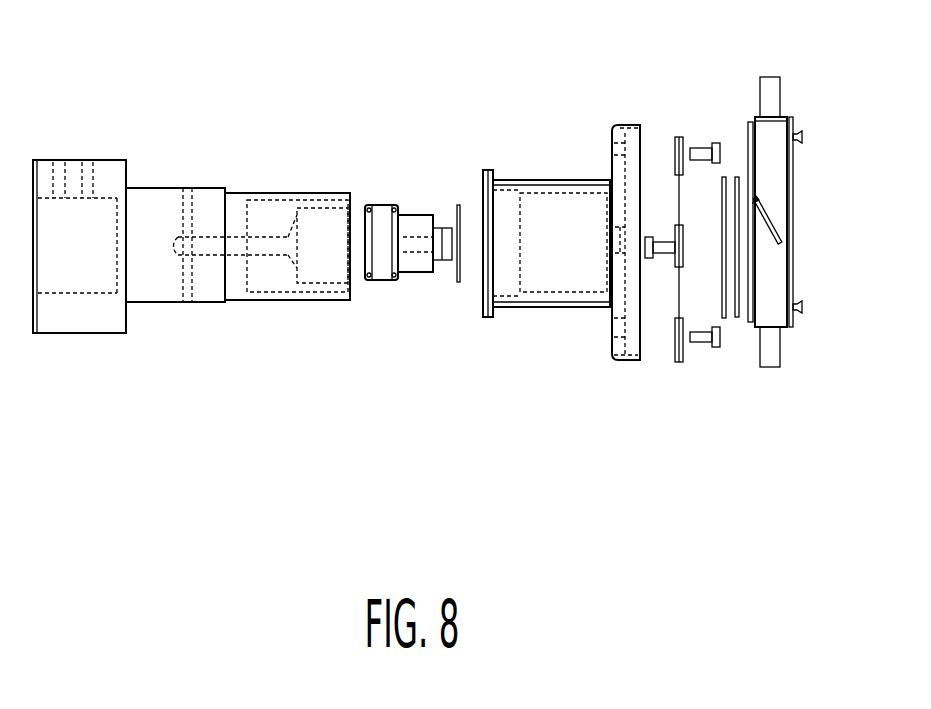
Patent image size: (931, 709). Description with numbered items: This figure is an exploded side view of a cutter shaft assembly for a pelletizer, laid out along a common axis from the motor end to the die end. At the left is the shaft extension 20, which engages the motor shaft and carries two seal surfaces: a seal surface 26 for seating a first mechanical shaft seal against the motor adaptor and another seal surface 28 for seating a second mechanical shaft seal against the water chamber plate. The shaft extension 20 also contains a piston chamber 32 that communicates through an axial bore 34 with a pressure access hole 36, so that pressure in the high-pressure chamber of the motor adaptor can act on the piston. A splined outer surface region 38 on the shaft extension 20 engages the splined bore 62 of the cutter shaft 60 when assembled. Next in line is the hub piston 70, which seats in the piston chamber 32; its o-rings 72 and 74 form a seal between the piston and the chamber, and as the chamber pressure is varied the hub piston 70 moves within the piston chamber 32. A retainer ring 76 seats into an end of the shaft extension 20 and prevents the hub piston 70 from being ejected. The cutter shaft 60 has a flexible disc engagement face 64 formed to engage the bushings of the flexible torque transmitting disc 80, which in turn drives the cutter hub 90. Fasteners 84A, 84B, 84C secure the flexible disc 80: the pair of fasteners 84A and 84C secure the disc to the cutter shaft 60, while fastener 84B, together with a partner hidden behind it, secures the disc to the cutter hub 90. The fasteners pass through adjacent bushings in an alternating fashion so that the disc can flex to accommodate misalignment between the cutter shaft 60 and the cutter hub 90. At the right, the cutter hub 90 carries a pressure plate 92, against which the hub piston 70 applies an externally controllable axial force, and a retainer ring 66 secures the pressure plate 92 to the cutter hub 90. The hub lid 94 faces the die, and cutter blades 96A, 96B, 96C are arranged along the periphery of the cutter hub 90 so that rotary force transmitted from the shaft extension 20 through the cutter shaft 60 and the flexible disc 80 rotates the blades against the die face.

The shaft extension 20 is at (152, 303).
The seal surface 26 is at (127, 172).
The seal surface 28 is at (226, 303).
The piston chamber 32 is at (326, 205).
The axial bore 34 is at (268, 235).
The pressure access hole 36 is at (180, 240).
The splined outer surface region 38 is at (290, 301).
The cutter shaft 60 is at (540, 308).
The splined bore 62 is at (543, 195).
The flexible disc engagement face 64 is at (632, 168).
The retainer ring 66 is at (724, 319).
The hub piston 70 is at (383, 281).
The o-ring 72 is at (371, 281).
The o-ring 74 is at (395, 281).
The retainer ring 76 is at (458, 283).
The flexible torque transmitting disc 80 is at (680, 363).
The fastener 84A is at (716, 142).
The fastener 84B is at (662, 256).
The fastener 84C is at (700, 343).
The cutter hub 90 is at (770, 368).
The pressure plate 92 is at (737, 176).
The hub lid 94 is at (790, 116).
The cutter blade 96A is at (780, 92).
The cutter blade 96B is at (783, 206).
The cutter blade 96C is at (780, 345).